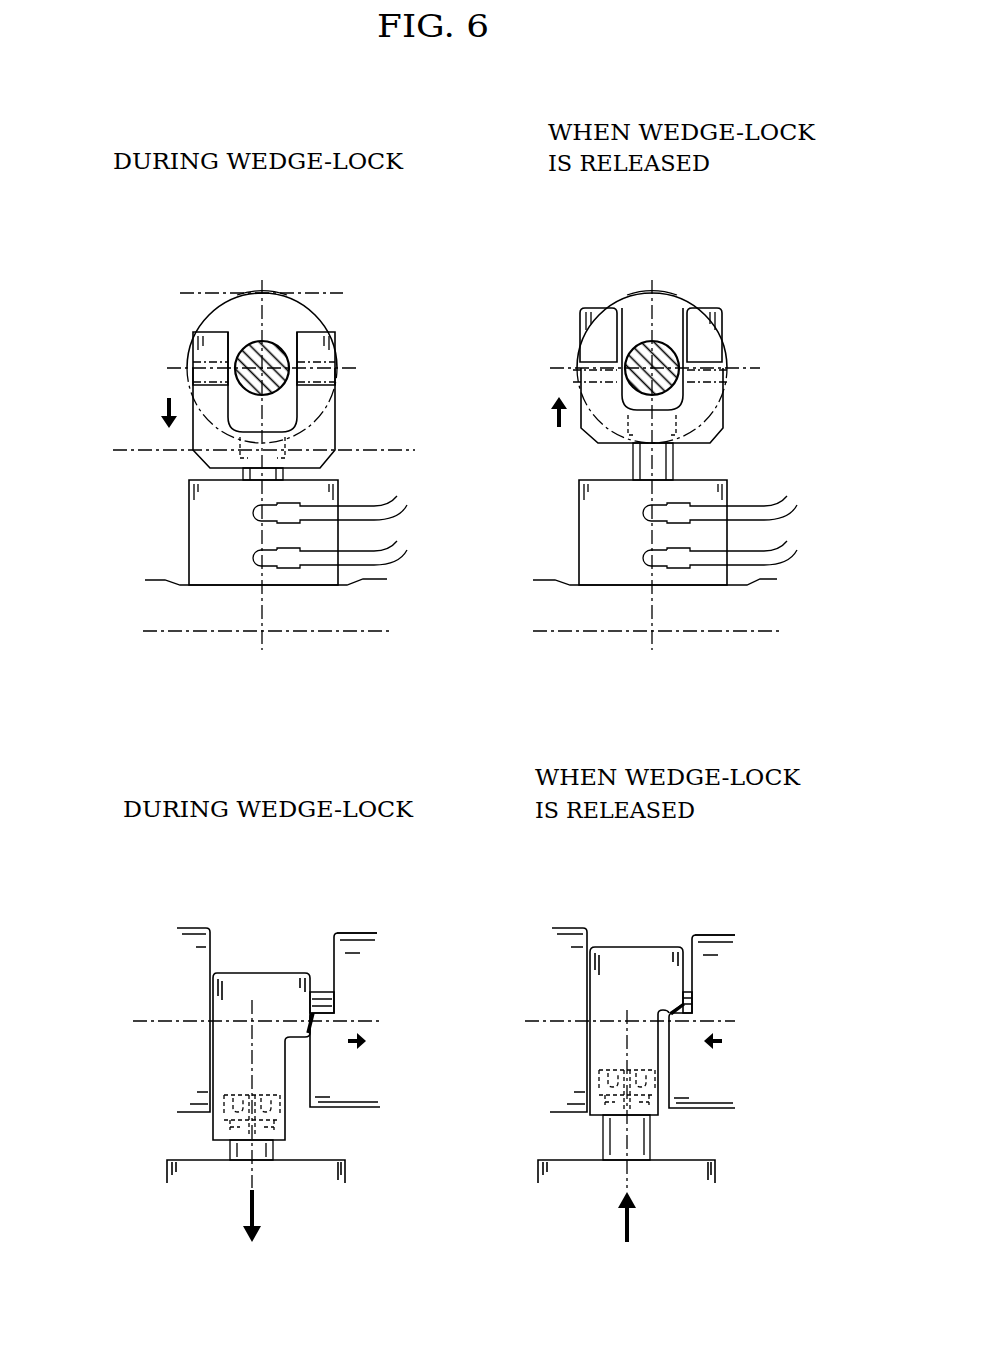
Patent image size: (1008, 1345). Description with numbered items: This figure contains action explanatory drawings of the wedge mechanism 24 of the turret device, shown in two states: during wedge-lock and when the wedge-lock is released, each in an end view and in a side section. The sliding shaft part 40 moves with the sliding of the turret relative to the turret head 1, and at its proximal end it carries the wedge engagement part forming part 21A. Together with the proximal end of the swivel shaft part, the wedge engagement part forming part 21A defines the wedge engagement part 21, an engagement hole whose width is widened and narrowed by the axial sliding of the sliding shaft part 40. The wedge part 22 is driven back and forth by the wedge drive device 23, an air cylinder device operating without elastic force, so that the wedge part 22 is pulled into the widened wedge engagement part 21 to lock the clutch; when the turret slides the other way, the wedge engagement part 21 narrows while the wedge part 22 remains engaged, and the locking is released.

The turret head 1 is at (358, 608).
The wedge engagement part 21 is at (176, 350).
The wedge engagement part forming part 21A is at (281, 295).
The wedge part 22 is at (315, 340).
The wedge drive device 23 is at (196, 548).
The wedge mechanism 24 is at (182, 268).
The sliding shaft part 40 is at (287, 393).